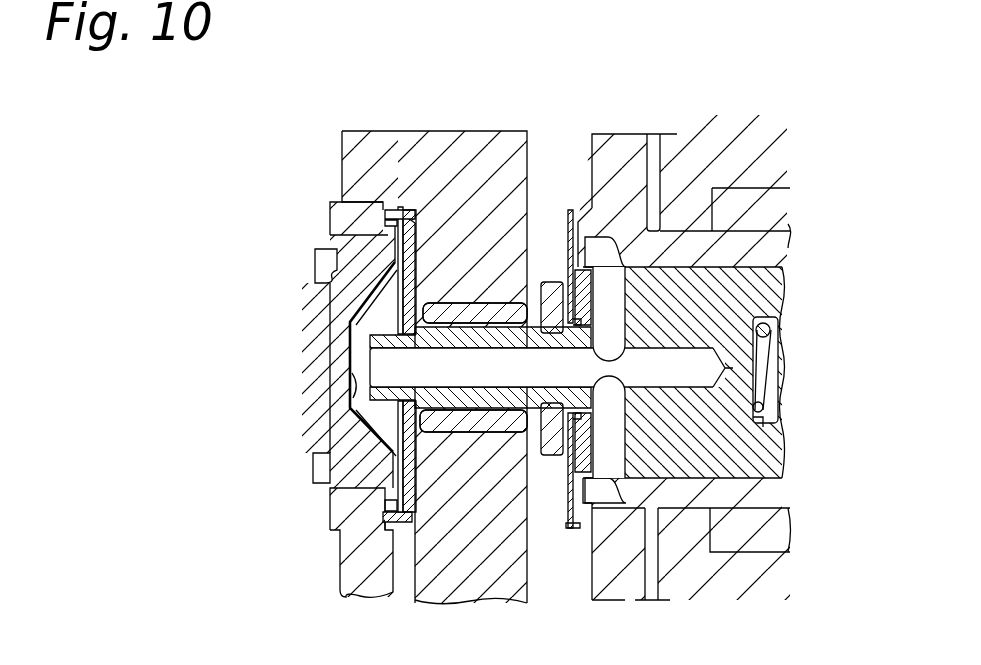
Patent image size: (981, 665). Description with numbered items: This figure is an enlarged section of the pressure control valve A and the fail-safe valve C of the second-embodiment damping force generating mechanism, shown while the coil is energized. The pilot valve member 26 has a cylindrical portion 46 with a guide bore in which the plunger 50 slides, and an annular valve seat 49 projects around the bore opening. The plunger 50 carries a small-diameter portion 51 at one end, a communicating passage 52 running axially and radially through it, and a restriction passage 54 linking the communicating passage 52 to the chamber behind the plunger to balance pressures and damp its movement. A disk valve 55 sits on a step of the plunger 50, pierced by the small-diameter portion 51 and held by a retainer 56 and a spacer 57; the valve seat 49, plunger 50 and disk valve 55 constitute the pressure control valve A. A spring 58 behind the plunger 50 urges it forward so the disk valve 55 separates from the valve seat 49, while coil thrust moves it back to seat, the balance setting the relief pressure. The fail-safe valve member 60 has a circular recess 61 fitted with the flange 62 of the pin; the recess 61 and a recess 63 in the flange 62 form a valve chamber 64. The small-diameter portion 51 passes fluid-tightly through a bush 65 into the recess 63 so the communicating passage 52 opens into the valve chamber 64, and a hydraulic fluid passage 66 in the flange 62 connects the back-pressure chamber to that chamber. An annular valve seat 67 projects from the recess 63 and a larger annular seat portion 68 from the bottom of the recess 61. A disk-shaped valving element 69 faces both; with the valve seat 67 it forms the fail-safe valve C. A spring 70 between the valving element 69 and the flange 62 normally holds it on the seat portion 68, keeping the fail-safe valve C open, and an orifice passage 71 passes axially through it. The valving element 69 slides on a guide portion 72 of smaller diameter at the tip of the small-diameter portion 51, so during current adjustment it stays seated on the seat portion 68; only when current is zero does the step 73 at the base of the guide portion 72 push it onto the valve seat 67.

The pilot valve member 26 is at (622, 163).
The cylindrical portion 46 is at (753, 497).
The annular valve seat 49 is at (592, 553).
The plunger 50 is at (770, 285).
The small-diameter portion 51 is at (520, 600).
The communicating passage 52 is at (370, 352).
The restriction passage 54 is at (740, 372).
The disk valve 55 is at (571, 215).
The retainer 56 is at (542, 500).
The spacer 57 is at (565, 500).
The spring 58 is at (773, 335).
The fail-safe valve member 60 is at (443, 550).
The circular recess 61 is at (399, 207).
The flange 62 is at (328, 200).
The recess 63 is at (352, 373).
The valve chamber 64 is at (330, 302).
The bush 65 is at (490, 582).
The hydraulic fluid passage 66 is at (335, 245).
The annular valve seat 67 is at (365, 422).
The annular seat portion 68 is at (410, 208).
The disk-shaped valving element 69 is at (385, 528).
The spring 70 is at (352, 557).
The orifice passage 71 is at (388, 515).
The guide portion 72 is at (347, 322).
The step 73 is at (427, 297).
The pressure control valve A is at (571, 190).
The fail-safe valve C is at (299, 263).